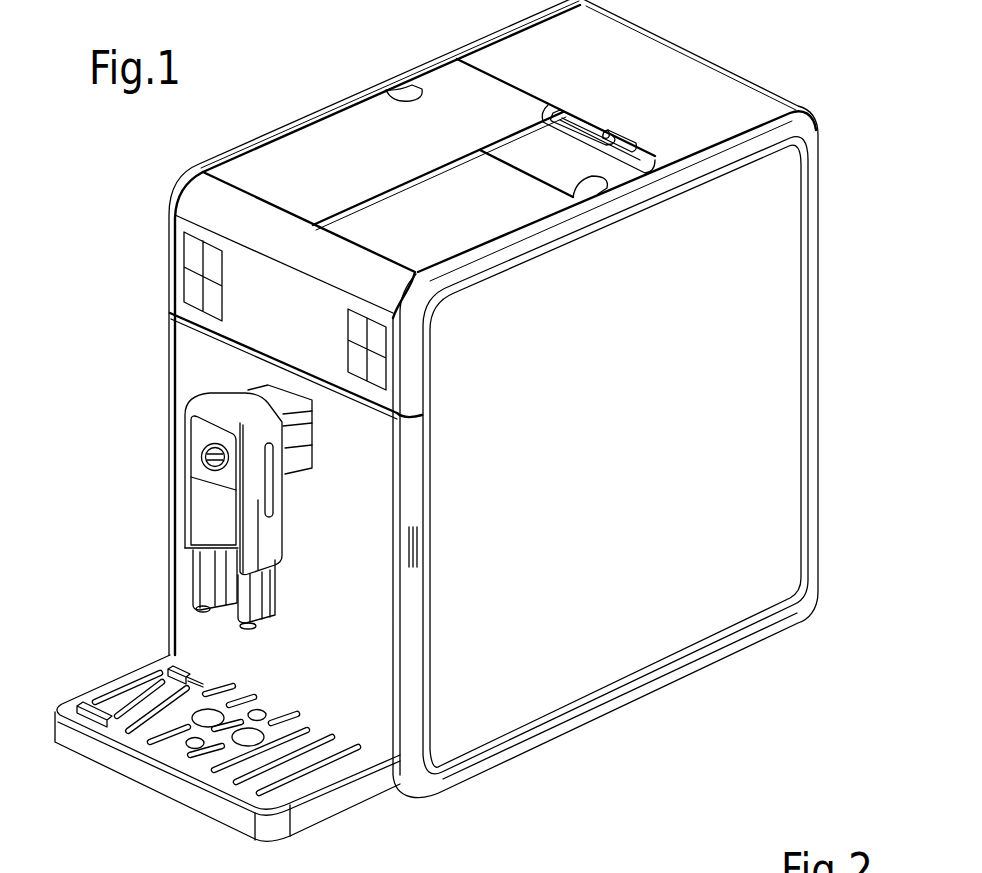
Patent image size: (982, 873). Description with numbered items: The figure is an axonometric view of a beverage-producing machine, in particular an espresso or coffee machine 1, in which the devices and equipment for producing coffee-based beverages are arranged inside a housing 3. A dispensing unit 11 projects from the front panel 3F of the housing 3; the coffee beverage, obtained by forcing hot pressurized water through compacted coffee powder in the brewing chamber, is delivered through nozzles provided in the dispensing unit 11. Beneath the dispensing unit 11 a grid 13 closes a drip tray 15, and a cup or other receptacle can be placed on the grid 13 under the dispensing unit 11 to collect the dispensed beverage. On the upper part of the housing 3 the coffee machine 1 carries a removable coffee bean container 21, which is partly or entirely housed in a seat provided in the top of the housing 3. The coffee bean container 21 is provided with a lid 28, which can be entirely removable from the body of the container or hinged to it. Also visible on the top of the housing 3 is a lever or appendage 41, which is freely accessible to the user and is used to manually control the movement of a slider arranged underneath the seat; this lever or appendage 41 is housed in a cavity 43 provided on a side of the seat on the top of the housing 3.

The coffee machine 1 is at (755, 706).
The housing 3 is at (775, 384).
The front panel 3F is at (367, 452).
The dispensing unit 11 is at (215, 507).
The grid 13 is at (143, 708).
The drip tray 15 is at (298, 818).
The removable coffee bean container 21 is at (735, 108).
The lid 28 is at (484, 131).
The lever or appendage 41 is at (622, 137).
The cavity 43 is at (583, 128).